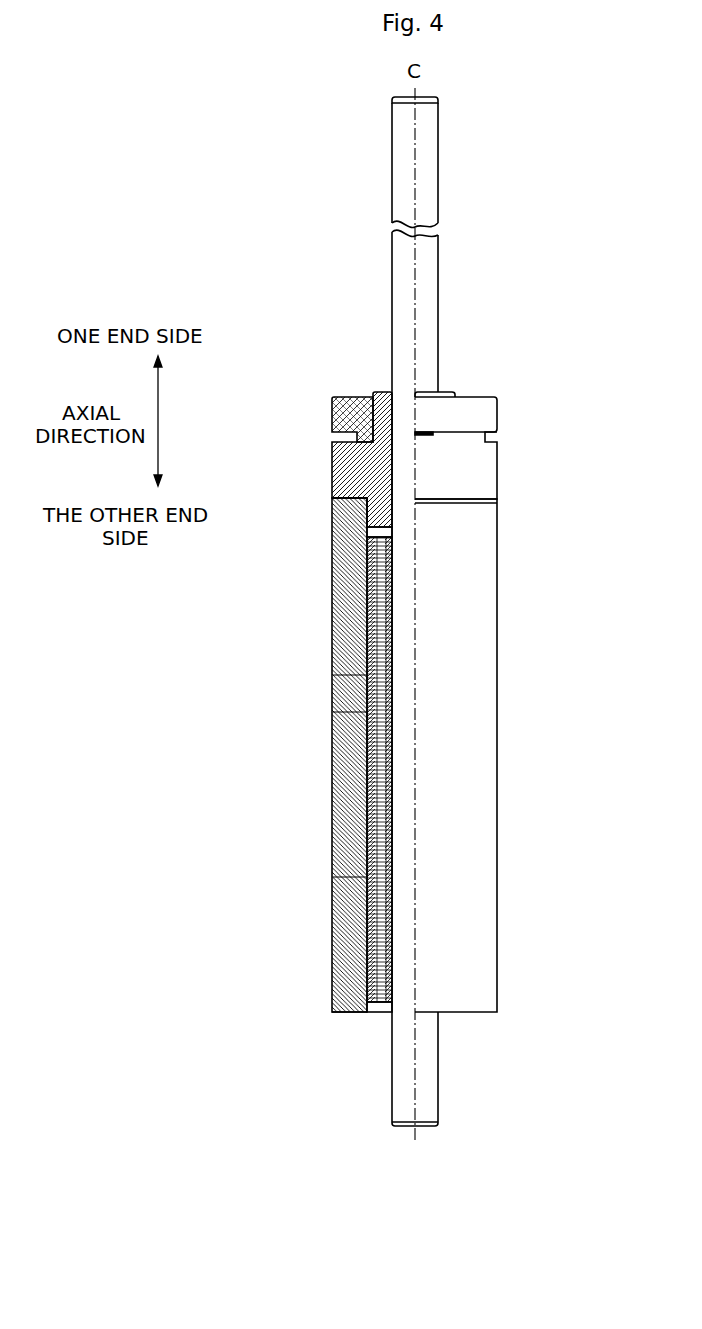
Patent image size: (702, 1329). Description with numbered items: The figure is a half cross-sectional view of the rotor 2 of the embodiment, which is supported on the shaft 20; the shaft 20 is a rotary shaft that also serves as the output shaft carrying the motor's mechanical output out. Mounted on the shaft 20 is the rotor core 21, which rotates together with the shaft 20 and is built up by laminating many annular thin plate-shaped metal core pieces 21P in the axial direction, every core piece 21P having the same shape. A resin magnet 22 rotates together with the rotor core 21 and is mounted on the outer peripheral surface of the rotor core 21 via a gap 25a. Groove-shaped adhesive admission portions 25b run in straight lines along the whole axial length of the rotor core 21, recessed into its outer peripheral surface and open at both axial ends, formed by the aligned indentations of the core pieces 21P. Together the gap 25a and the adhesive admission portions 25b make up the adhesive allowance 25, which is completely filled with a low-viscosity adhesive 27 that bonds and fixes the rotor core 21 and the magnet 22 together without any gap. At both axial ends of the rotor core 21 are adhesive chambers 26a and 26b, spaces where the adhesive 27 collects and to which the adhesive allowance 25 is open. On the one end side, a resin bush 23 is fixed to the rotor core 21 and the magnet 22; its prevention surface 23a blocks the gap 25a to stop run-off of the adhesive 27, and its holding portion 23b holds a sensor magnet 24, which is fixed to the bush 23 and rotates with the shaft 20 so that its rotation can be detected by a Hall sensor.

The rotor 2 is at (215, 168).
The shaft 20 is at (400, 179).
The rotor core 21 is at (348, 930).
The core piece 21P is at (332, 1005).
The resin magnet 22 is at (510, 601).
The bush 23 is at (512, 474).
The prevention surface 23a is at (362, 525).
The holding portion 23b is at (332, 409).
The sensor magnet 24 is at (510, 402).
The adhesive allowance 25 is at (258, 662).
The gap 25a is at (352, 677).
The adhesive admission portion 25b is at (352, 712).
The adhesive chamber 26a is at (388, 533).
The adhesive chamber 26b is at (378, 1010).
The adhesive 27 is at (352, 876).